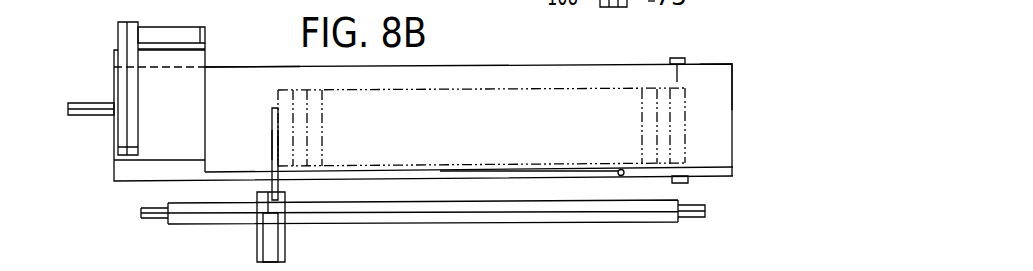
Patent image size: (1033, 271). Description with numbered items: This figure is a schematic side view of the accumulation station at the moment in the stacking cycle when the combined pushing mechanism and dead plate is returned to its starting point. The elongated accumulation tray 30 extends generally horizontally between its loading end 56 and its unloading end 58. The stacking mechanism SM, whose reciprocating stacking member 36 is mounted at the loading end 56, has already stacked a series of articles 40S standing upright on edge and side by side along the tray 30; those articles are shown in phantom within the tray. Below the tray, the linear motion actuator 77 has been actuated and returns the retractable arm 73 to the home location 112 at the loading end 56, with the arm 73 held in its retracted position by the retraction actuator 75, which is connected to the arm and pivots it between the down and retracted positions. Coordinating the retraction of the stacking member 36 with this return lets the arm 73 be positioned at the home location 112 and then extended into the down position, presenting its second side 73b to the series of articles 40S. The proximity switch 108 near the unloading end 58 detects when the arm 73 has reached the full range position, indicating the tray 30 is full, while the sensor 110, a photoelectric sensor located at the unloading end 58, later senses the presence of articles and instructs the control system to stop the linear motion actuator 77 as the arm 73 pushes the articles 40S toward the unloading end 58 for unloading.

The reciprocating stacking member 36 is at (153, 88).
The stacking mechanism SM is at (218, 46).
The elongated accumulation tray 30 is at (568, 63).
The loading end 56 is at (238, 80).
The unloading end 58 is at (708, 75).
The home location 112 is at (187, 188).
The series of articles 40S is at (483, 90).
The sensor 110 is at (678, 58).
The proximity switch 108 is at (616, 173).
The retractable arm 73 is at (272, 155).
The second side of the retractable arm 73b is at (278, 140).
The retraction actuator 75 is at (270, 240).
The linear motion actuator 77 is at (408, 218).